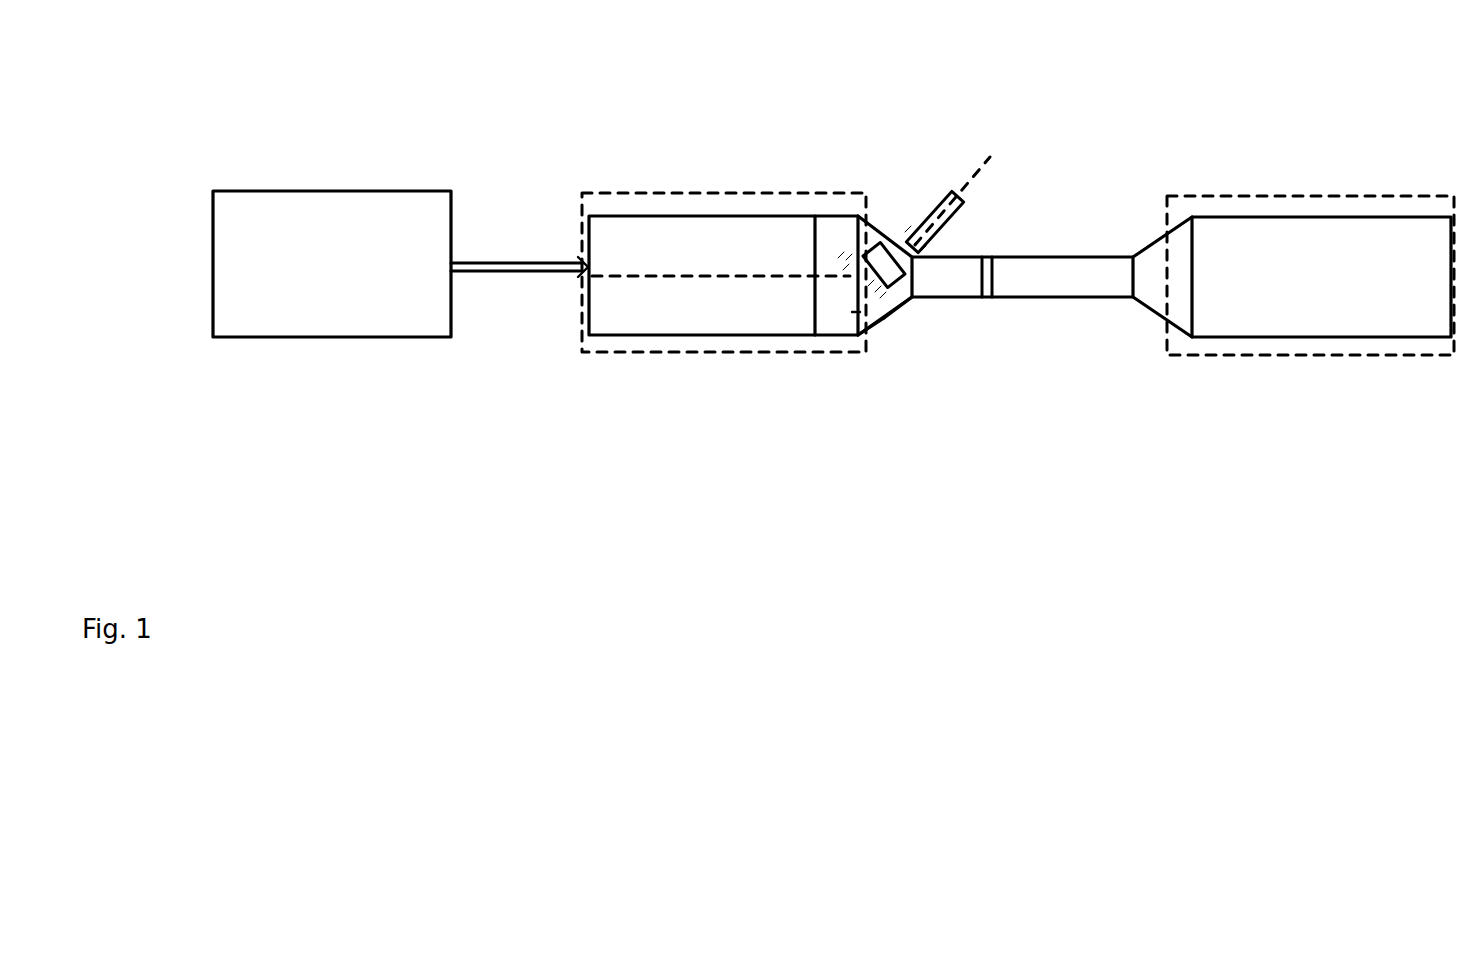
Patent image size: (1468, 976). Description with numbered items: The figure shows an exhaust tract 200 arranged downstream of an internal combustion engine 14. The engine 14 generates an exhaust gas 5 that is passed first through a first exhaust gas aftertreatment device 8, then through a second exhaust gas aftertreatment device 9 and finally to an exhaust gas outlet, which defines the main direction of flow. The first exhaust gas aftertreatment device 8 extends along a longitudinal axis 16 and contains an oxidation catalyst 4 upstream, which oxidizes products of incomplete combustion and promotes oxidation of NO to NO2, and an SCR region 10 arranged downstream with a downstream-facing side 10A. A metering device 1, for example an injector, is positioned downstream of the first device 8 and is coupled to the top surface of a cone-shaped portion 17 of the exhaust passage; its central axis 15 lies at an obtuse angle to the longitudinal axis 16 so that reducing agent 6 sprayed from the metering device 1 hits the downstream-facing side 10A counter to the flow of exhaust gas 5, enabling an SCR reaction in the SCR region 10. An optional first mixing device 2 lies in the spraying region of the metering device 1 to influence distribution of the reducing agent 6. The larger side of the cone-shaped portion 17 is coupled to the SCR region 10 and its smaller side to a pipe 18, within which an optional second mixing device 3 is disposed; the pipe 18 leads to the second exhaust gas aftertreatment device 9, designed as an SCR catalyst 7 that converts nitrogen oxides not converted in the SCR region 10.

The optical system 200 is at (1214, 95).
The internal combustion engine 14 is at (340, 192).
The exhaust gas 5 is at (510, 257).
The first exhaust gas aftertreatment device 8 is at (738, 193).
The oxidation catalyst 4 is at (720, 315).
The longitudinal axis 16 is at (672, 272).
The SCR region 10 is at (827, 327).
The downstream-facing side 10A is at (867, 337).
The first mixing device 2 is at (871, 238).
The metering device 1 is at (942, 198).
The central axis 15 is at (987, 160).
The second mixing device 3 is at (993, 257).
The reducing agent 6 is at (902, 303).
The cone-shaped portion 17 is at (893, 318).
The pipe 18 is at (1115, 298).
The second exhaust gas aftertreatment device 9 is at (1318, 196).
The SCR catalyst 7 is at (1293, 302).